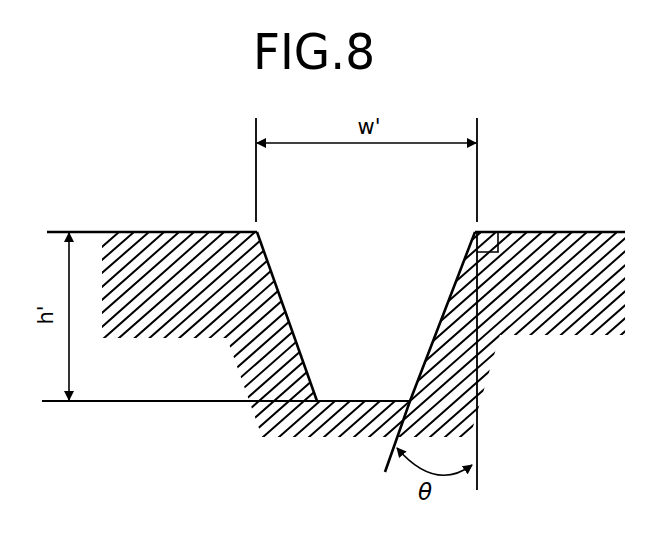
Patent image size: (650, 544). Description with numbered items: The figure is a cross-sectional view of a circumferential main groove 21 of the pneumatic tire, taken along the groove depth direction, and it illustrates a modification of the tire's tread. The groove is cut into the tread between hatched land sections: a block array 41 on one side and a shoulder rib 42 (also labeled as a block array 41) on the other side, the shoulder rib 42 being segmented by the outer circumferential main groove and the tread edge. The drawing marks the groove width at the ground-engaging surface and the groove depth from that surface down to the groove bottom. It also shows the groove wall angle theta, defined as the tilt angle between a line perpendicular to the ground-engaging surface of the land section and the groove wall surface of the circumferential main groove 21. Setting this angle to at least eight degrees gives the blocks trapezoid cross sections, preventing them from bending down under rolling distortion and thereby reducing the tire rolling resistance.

The block array 41 is at (157, 232).
The shoulder rib 42 is at (557, 232).
The circumferential main groove 21 is at (365, 251).